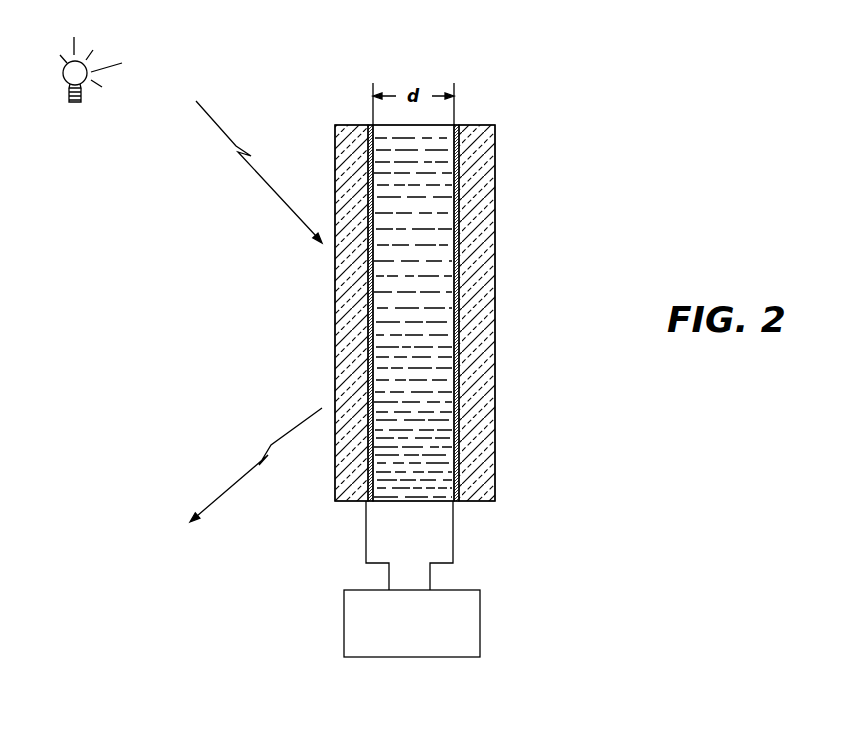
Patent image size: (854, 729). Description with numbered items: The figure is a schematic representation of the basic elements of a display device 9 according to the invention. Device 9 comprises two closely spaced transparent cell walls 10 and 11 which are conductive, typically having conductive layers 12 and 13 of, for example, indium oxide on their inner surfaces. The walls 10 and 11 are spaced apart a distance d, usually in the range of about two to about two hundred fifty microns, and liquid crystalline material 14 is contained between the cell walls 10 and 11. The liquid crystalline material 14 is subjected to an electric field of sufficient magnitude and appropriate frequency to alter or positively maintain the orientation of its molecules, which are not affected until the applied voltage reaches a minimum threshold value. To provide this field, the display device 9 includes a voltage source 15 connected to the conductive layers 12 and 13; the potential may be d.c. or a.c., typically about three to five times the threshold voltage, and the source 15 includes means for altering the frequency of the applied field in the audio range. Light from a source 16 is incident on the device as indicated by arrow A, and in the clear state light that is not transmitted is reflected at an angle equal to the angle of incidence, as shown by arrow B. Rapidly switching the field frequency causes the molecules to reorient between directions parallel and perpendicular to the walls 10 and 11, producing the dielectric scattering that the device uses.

The display device 9 is at (455, 315).
The transparent cell wall 10 is at (345, 493).
The transparent cell wall 11 is at (490, 330).
The conductive layer 12 is at (360, 161).
The conductive layer 13 is at (465, 298).
The liquid crystalline material 14 is at (412, 480).
The voltage source 15 is at (466, 590).
The light source 16 is at (90, 37).
The arrow A is at (250, 165).
The arrow B is at (241, 473).